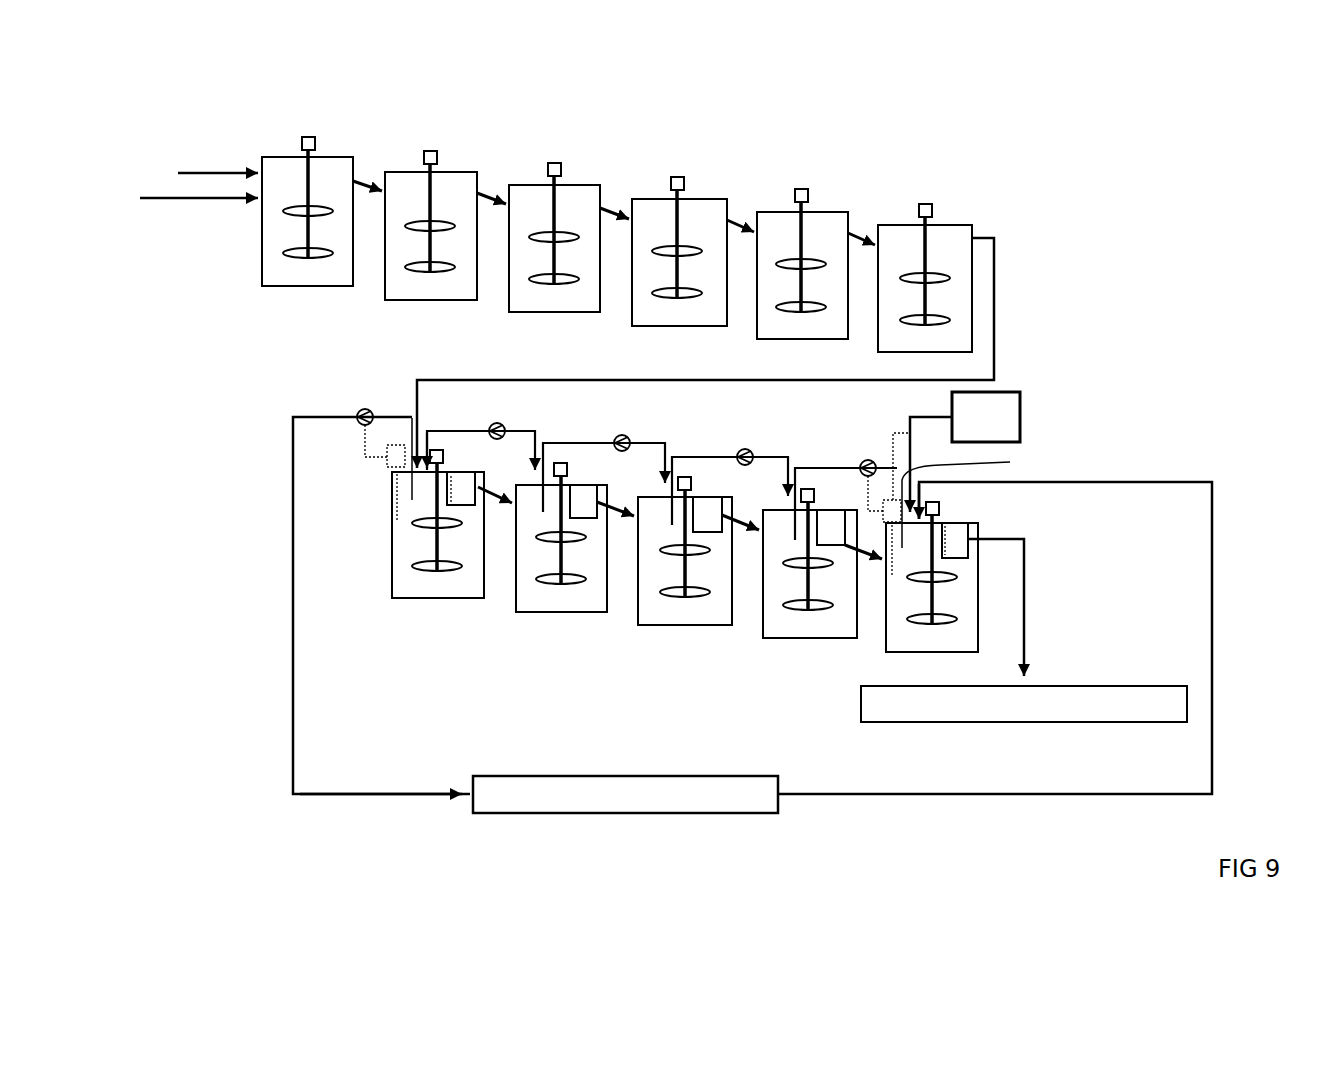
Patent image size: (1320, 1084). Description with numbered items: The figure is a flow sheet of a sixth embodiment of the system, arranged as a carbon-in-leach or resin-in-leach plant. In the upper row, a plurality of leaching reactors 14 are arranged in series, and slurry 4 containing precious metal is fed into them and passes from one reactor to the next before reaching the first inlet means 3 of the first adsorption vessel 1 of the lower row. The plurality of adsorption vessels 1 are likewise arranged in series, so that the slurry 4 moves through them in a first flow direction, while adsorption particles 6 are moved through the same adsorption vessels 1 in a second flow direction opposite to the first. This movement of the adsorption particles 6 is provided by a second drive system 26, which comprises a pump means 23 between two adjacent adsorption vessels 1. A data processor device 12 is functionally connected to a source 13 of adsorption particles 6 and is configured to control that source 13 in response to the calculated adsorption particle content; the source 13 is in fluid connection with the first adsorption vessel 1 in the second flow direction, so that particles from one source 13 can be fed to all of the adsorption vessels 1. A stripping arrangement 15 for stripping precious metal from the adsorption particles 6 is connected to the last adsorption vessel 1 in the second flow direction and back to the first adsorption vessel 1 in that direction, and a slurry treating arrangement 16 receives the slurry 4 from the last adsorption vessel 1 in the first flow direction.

The adsorption vessel 1 is at (443, 598).
The first inlet means 3 is at (237, 224).
The slurry 4 is at (188, 173).
The adsorption particles 6 is at (933, 453).
The data processor device 12 is at (397, 445).
The source of adsorption particles 13 is at (965, 452).
The leaching reactor 14 is at (305, 286).
The stripping arrangement 15 is at (625, 794).
The slurry treating arrangement 16 is at (1024, 630).
The pump means 23 is at (365, 409).
The second drive system 26 is at (330, 408).